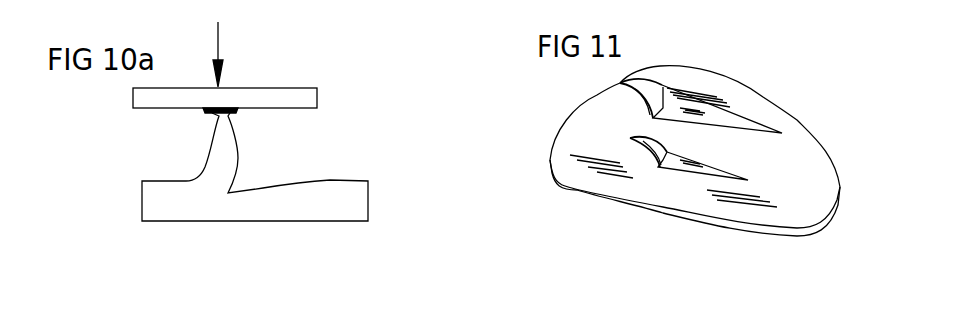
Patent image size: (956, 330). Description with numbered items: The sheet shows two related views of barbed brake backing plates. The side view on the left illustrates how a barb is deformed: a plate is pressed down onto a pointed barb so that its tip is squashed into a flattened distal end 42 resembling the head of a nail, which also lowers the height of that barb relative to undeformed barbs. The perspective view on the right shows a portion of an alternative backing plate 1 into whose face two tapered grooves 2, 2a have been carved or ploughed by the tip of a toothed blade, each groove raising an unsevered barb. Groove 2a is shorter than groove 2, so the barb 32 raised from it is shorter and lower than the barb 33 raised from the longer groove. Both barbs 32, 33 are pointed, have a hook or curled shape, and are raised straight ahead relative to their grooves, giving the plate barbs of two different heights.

In FIG. 10A, the flattened distal end 42 is at (232, 115).
In FIG. 11, the backing plate 1 is at (768, 233).
In FIG. 11, the tapered groove 2 is at (733, 120).
In FIG. 11, the tapered groove 2a is at (697, 172).
In FIG. 11, the barb 32 is at (653, 148).
In FIG. 11, the barb 33 is at (660, 86).